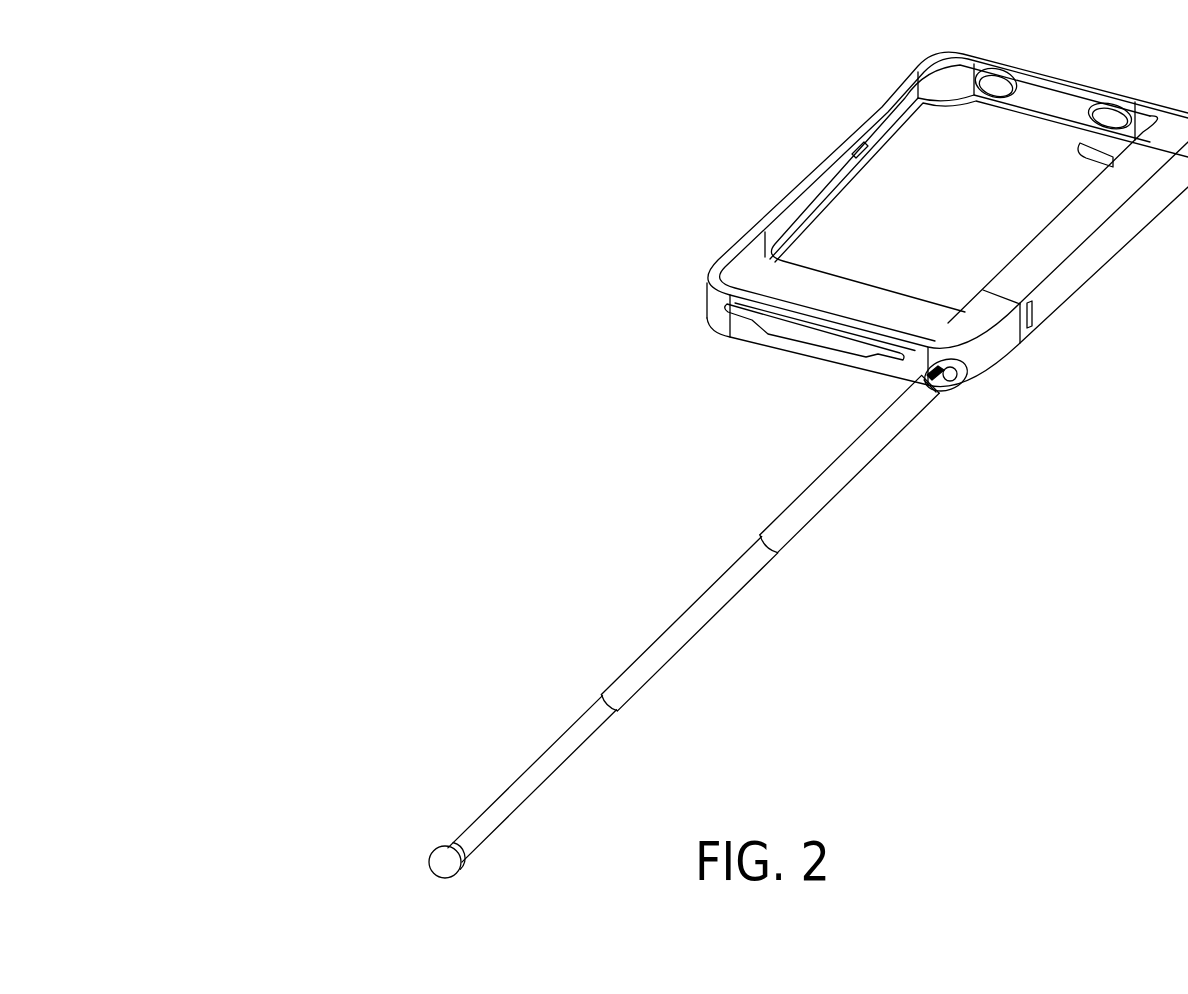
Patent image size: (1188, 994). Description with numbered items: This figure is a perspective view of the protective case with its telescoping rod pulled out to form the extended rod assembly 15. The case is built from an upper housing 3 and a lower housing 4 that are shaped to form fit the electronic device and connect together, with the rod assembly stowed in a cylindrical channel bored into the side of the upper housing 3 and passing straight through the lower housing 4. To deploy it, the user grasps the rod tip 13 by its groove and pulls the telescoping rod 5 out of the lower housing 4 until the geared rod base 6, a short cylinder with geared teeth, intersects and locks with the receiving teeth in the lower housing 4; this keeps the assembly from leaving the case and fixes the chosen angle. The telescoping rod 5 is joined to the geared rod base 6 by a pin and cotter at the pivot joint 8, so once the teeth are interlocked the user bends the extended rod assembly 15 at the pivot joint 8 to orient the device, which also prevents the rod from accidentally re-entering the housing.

The upper housing 3 is at (797, 174).
The lower housing 4 is at (695, 273).
The telescoping rod 5 is at (688, 641).
The geared rod base 6 is at (957, 375).
The pivot joint 8 is at (930, 388).
The rod tip 13 is at (447, 858).
The extended rod assembly 15 is at (618, 622).